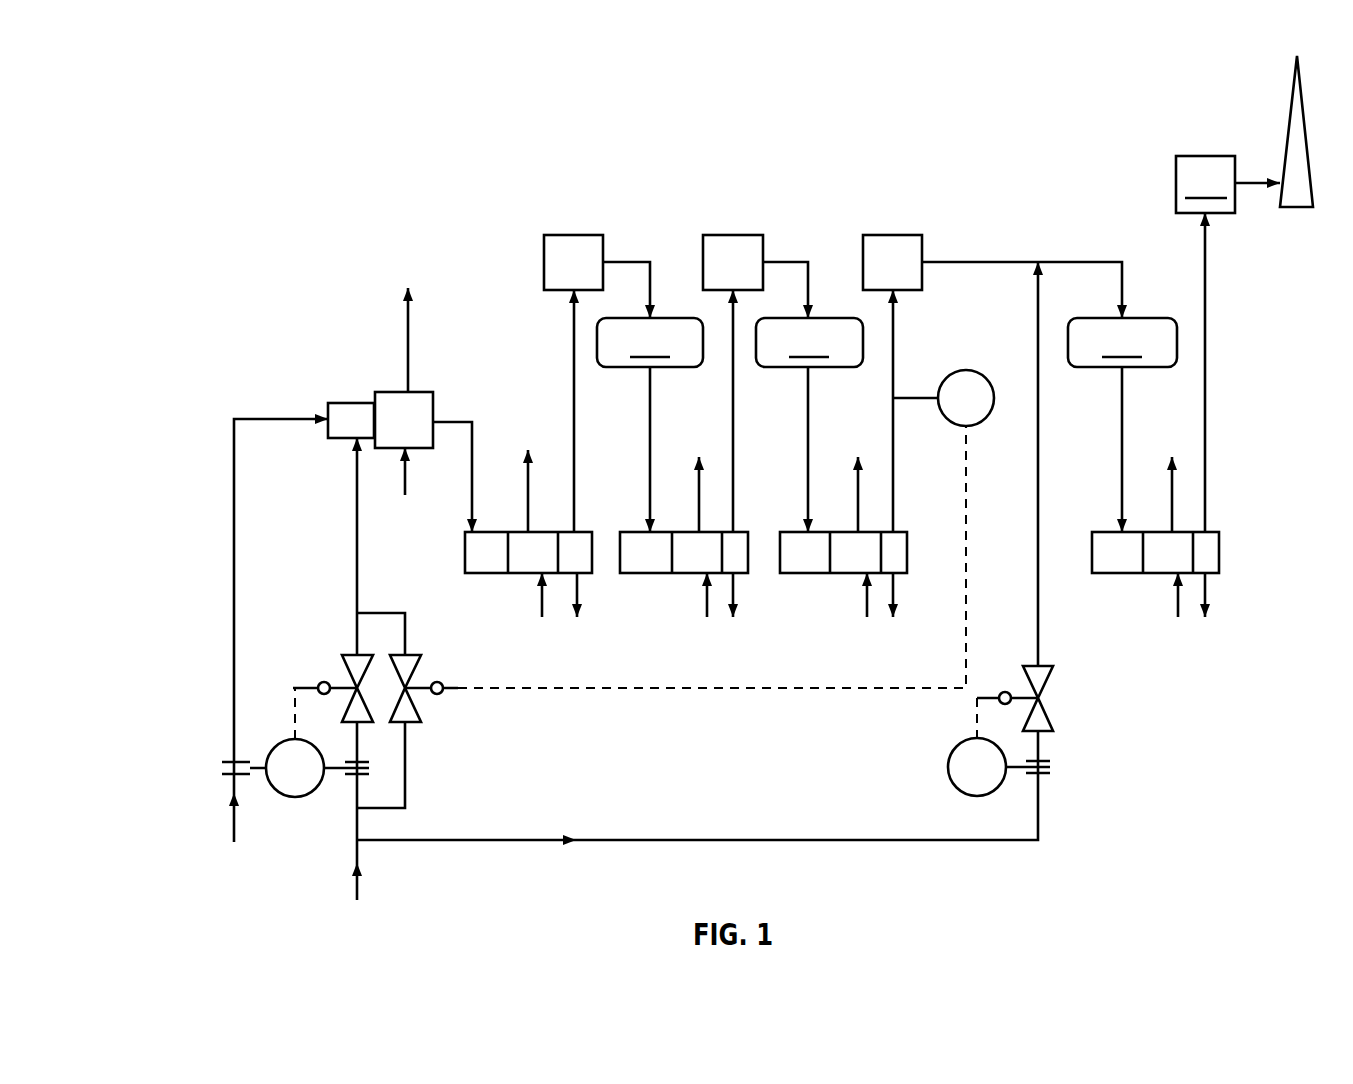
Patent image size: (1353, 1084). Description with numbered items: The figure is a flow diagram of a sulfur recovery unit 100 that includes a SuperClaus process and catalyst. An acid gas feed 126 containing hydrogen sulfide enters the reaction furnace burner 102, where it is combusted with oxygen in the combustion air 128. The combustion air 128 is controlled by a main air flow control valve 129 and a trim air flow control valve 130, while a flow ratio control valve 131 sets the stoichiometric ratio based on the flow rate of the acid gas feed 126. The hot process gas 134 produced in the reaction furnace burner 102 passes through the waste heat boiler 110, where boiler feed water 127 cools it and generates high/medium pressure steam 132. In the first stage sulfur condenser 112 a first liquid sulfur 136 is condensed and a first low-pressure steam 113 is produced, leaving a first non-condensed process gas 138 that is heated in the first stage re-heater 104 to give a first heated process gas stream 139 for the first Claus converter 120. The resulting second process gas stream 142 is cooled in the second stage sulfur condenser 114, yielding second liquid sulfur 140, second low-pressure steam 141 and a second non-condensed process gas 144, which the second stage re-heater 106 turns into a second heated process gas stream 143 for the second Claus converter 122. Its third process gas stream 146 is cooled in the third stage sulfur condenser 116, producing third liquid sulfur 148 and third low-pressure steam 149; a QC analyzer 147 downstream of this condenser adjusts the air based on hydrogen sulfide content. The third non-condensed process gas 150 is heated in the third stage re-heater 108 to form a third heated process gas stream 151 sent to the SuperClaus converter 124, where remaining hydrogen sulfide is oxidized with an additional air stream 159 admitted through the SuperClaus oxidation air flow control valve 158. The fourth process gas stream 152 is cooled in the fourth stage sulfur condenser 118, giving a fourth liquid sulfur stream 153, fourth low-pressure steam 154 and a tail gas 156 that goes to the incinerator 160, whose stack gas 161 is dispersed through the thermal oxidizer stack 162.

The sulfur recovery unit 100 is at (180, 148).
The reaction furnace burner 102 is at (350, 403).
The first stage re-heater 104 is at (560, 235).
The second stage re-heater 106 is at (725, 235).
The third stage re-heater 108 is at (880, 235).
The waste heat boiler 110 is at (420, 392).
The first stage sulfur condenser 112 is at (530, 565).
The first low-pressure steam 113 is at (530, 507).
The second stage sulfur condenser 114 is at (701, 560).
The third stage sulfur condenser 116 is at (858, 565).
The fourth stage sulfur condenser 118 is at (1167, 560).
The first Claus converter 120 is at (650, 342).
The second Claus converter 122 is at (809, 342).
The SuperClaus converter 124 is at (1122, 342).
The acid gas feed 126 is at (234, 820).
The boiler feed water 127 is at (405, 473).
The combustion air 128 is at (360, 893).
The main air flow control valve 129 is at (352, 660).
The trim air flow control valve 130 is at (412, 715).
The flow ratio control valve 131 is at (292, 797).
The high/medium pressure steam 132 is at (408, 345).
The process gas 134 is at (470, 495).
The first liquid sulfur 136 is at (577, 598).
The first non-condensed process gas 138 is at (574, 345).
The first heated process gas stream 139 is at (635, 262).
The second liquid sulfur 140 is at (733, 585).
The second low-pressure steam 141 is at (699, 497).
The second process gas stream 142 is at (650, 380).
The second heated process gas stream 143 is at (800, 262).
The second non-condensed process gas 144 is at (733, 375).
The third process gas stream 146 is at (808, 375).
The QC analyzer 147 is at (994, 400).
The third liquid sulfur 148 is at (893, 598).
The third low-pressure steam 149 is at (858, 512).
The third non-condensed process gas 150 is at (893, 348).
The third heated process gas stream 151 is at (1010, 262).
The fourth process gas stream 152 is at (1122, 380).
The fourth liquid sulfur stream 153 is at (1205, 580).
The fourth low-pressure steam 154 is at (1172, 513).
The tail gas 156 is at (1205, 395).
The SuperClaus oxidation air flow control valve 158 is at (1048, 682).
The additional air stream 159 is at (1038, 592).
The incinerator 160 is at (1205, 184).
The stack gas 161 is at (1262, 183).
The thermal oxidizer stack 162 is at (1283, 98).